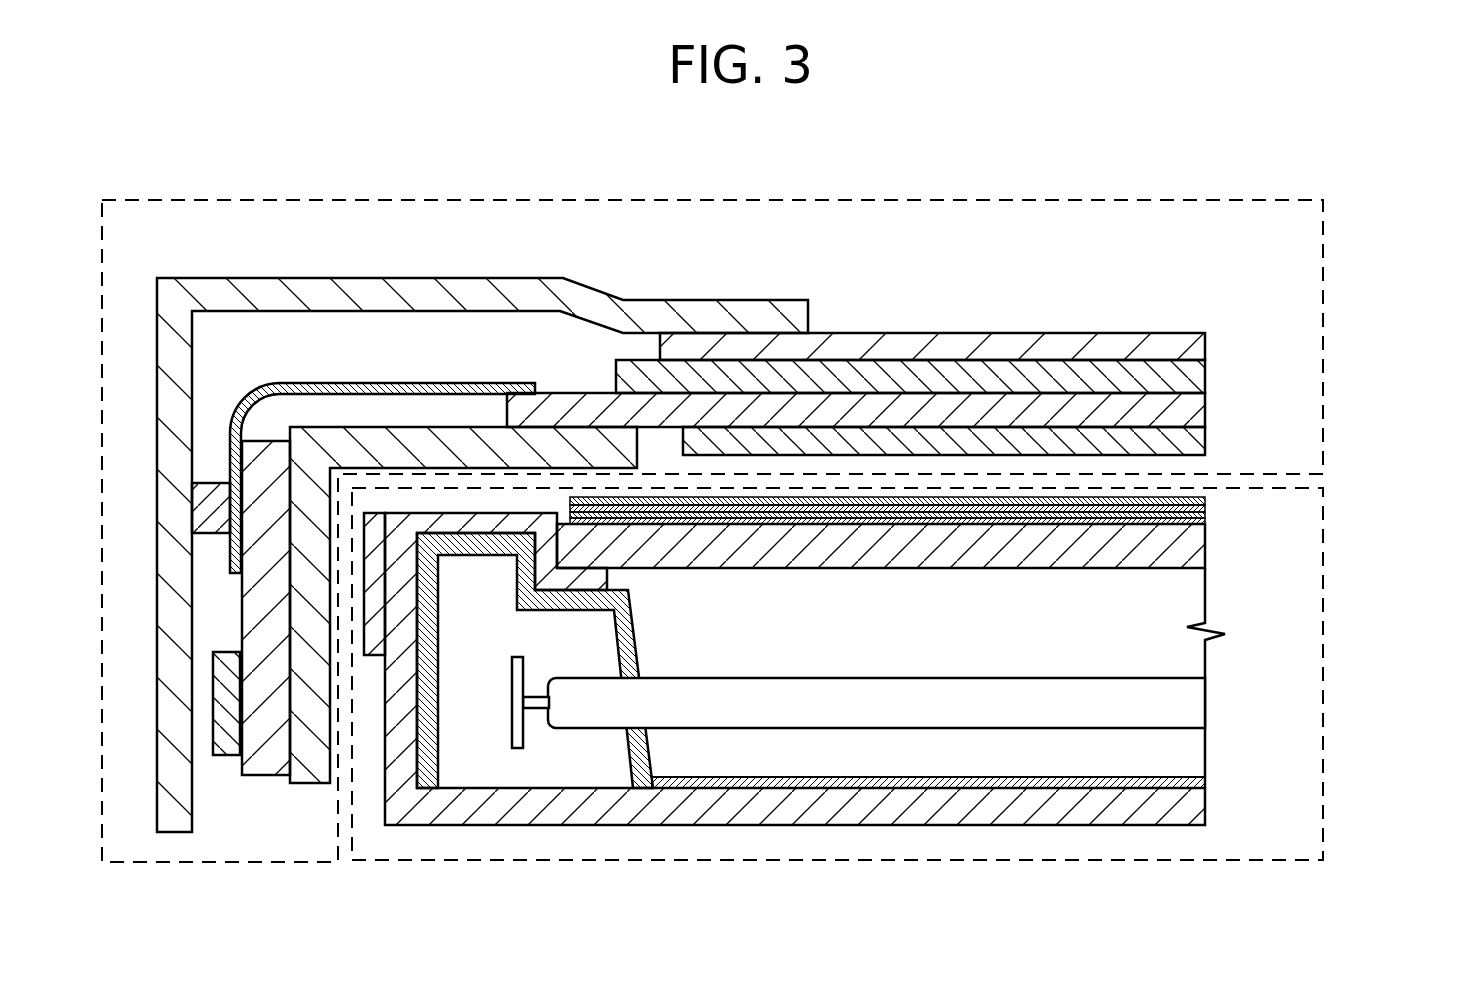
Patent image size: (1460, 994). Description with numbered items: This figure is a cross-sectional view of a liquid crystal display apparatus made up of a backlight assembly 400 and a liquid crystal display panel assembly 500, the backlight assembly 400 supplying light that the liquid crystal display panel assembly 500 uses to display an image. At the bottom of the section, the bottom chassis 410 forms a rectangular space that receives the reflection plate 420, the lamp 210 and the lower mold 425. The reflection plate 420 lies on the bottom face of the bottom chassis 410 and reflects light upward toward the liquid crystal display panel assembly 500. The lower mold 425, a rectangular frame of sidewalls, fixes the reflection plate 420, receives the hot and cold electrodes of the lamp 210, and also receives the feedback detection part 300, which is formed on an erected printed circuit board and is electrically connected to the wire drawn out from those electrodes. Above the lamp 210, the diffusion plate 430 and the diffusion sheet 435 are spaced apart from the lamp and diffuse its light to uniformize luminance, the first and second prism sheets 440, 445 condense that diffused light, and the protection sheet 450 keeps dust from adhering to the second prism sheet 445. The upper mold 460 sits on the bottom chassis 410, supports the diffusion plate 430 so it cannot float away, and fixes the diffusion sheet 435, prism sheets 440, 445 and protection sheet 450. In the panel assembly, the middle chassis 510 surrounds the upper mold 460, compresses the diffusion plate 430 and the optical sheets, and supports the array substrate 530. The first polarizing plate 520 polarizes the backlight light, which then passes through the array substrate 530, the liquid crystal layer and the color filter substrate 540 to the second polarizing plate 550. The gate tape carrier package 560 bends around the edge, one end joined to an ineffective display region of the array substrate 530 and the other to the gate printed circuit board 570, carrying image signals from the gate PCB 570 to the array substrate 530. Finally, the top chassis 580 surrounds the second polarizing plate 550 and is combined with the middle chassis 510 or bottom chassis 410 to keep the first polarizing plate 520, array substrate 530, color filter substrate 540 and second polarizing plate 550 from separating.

The lamp 210 is at (781, 690).
The feedback detection part 300 is at (513, 748).
The backlight assembly 400 is at (1323, 673).
The bottom chassis 410 is at (695, 812).
The reflection plate 420 is at (787, 790).
The lower mold 425 is at (627, 633).
The diffusion plate 430 is at (1100, 555).
The diffusion sheet 435 is at (1030, 518).
The first prism sheet 440 is at (968, 512).
The second prism sheet 445 is at (902, 505).
The protection sheet 450 is at (842, 497).
The upper mold 460 is at (374, 650).
The liquid crystal display panel assembly 500 is at (1323, 336).
The middle chassis 510 is at (307, 762).
The first polarizing plate 520 is at (1200, 445).
The array substrate 530 is at (1200, 413).
The color filter substrate 540 is at (1200, 380).
The second polarizing plate 550 is at (1200, 347).
The gate tape carrier package 560 is at (368, 392).
The gate printed circuit board 570 is at (267, 753).
The top chassis 580 is at (462, 284).